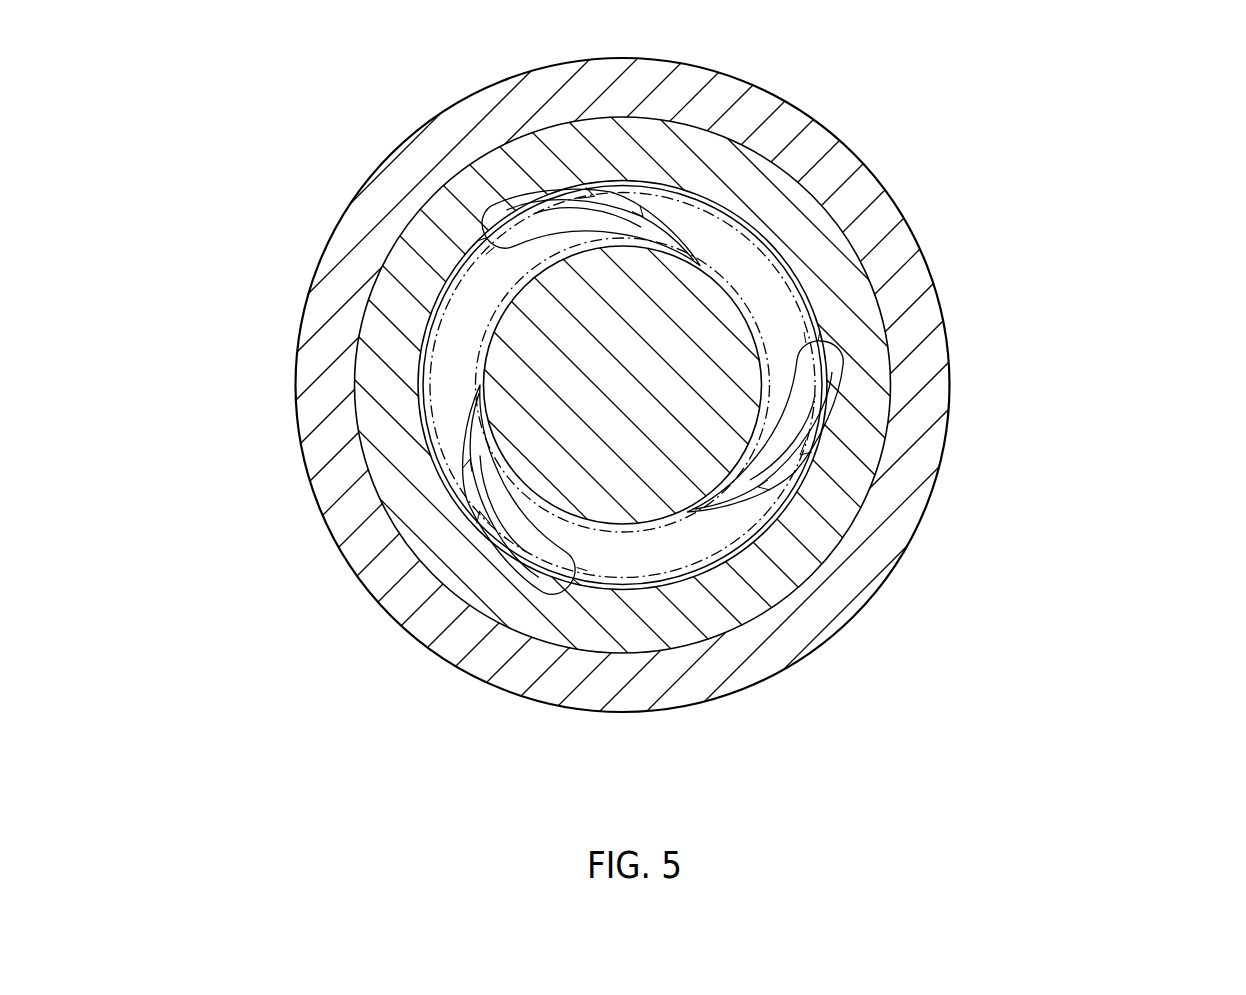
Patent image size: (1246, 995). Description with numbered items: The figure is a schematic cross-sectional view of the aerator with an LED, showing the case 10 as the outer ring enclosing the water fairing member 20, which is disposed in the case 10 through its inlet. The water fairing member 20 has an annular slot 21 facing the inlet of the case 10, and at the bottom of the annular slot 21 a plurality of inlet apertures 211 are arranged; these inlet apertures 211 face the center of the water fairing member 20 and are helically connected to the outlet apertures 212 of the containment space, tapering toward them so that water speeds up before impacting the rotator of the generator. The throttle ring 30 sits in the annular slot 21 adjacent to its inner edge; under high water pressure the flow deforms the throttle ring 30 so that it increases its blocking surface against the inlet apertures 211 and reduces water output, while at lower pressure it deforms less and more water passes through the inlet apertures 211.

The case 10 is at (858, 148).
The water fairing member 20 is at (892, 318).
The annular slot 21 is at (460, 495).
The inlet apertures 211 is at (488, 234).
The outlet apertures 212 is at (672, 252).
The throttle ring 30 is at (425, 385).